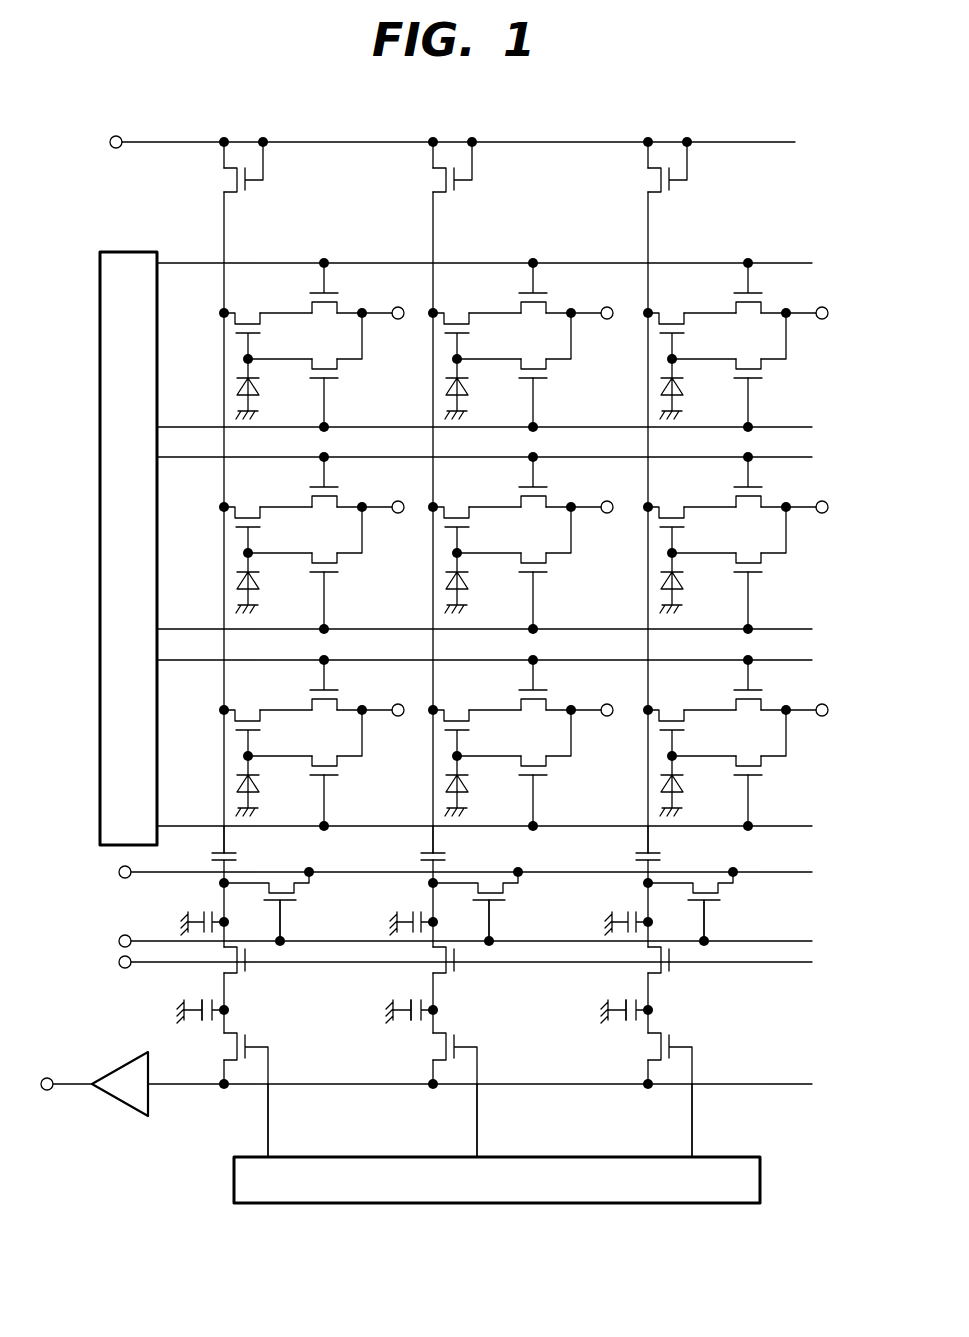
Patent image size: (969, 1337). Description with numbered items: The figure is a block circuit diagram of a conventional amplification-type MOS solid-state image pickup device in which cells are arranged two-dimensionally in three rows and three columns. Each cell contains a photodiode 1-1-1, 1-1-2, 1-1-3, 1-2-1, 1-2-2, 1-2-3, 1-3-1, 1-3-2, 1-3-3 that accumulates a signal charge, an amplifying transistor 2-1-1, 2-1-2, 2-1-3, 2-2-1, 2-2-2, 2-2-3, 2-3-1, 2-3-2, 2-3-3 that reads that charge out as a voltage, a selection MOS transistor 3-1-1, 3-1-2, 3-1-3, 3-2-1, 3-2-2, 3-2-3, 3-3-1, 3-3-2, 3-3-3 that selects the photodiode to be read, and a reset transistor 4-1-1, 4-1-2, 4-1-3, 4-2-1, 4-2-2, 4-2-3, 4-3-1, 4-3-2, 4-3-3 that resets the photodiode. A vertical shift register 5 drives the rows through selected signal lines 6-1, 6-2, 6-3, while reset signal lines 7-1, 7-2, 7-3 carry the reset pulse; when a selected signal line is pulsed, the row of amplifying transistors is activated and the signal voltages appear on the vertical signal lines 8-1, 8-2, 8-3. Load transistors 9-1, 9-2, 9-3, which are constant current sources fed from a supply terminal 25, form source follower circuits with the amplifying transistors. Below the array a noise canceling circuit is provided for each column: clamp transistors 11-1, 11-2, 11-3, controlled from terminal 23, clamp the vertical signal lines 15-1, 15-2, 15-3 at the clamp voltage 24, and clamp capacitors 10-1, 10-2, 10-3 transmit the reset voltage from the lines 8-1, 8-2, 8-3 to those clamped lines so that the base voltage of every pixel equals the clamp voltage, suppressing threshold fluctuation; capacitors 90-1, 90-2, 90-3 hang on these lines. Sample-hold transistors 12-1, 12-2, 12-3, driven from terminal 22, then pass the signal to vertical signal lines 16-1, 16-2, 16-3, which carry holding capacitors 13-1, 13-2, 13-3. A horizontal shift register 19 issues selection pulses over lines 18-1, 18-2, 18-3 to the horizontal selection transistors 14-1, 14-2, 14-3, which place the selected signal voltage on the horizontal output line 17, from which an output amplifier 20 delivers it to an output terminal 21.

The photodiode 1-1-1 is at (258, 399).
The photodiode 1-1-2 is at (467, 399).
The photodiode 1-1-3 is at (682, 399).
The photodiode 1-2-1 is at (258, 593).
The photodiode 1-2-2 is at (467, 593).
The photodiode 1-2-3 is at (682, 593).
The photodiode 1-3-1 is at (258, 796).
The photodiode 1-3-2 is at (467, 796).
The photodiode 1-3-3 is at (682, 796).
The amplifying transistor 2-1-1 is at (249, 324).
The amplifying transistor 2-1-2 is at (458, 324).
The amplifying transistor 2-1-3 is at (673, 324).
The amplifying transistor 2-2-1 is at (249, 518).
The amplifying transistor 2-2-2 is at (458, 518).
The amplifying transistor 2-2-3 is at (673, 518).
The amplifying transistor 2-3-1 is at (249, 721).
The amplifying transistor 2-3-2 is at (458, 721).
The amplifying transistor 2-3-3 is at (673, 721).
The selection MOS transistor 3-1-1 is at (342, 294).
The selection MOS transistor 3-1-2 is at (551, 294).
The selection MOS transistor 3-1-3 is at (766, 294).
The selection MOS transistor 3-2-1 is at (342, 488).
The selection MOS transistor 3-2-2 is at (551, 488).
The selection MOS transistor 3-2-3 is at (766, 488).
The selection MOS transistor 3-3-1 is at (342, 691).
The selection MOS transistor 3-3-2 is at (551, 691).
The selection MOS transistor 3-3-3 is at (766, 691).
The reset transistor 4-1-1 is at (338, 370).
The reset transistor 4-1-2 is at (547, 370).
The reset transistor 4-1-3 is at (762, 370).
The reset transistor 4-2-1 is at (338, 564).
The reset transistor 4-2-2 is at (547, 564).
The reset transistor 4-2-3 is at (762, 564).
The reset transistor 4-3-1 is at (338, 767).
The reset transistor 4-3-2 is at (547, 767).
The reset transistor 4-3-3 is at (762, 767).
The vertical shift register 5 is at (124, 250).
The selected signal line 6-1 is at (188, 263).
The selected signal line 6-2 is at (188, 457).
The selected signal line 6-3 is at (188, 660).
The reset signal line 7-1 is at (188, 427).
The reset signal line 7-2 is at (188, 629).
The reset signal line 7-3 is at (188, 826).
The vertical signal line 8-1 is at (222, 847).
The vertical signal line 8-2 is at (431, 847).
The vertical signal line 8-3 is at (646, 847).
The load transistor 9-1 is at (248, 194).
The load transistor 9-2 is at (457, 194).
The load transistor 9-3 is at (672, 194).
The clamp capacitor 10-1 is at (238, 858).
The clamp capacitor 10-2 is at (447, 858).
The clamp capacitor 10-3 is at (662, 858).
The clamp transistor 11-1 is at (294, 890).
The clamp transistor 11-2 is at (503, 890).
The clamp transistor 11-3 is at (718, 890).
The sample-hold transistor 12-1 is at (248, 970).
The sample-hold transistor 12-2 is at (457, 970).
The sample-hold transistor 12-3 is at (672, 970).
The holding capacitor 13-1 is at (204, 1021).
The holding capacitor 13-2 is at (413, 1021).
The holding capacitor 13-3 is at (628, 1021).
The horizontal selection transistor 14-1 is at (248, 1036).
The horizontal selection transistor 14-2 is at (457, 1036).
The horizontal selection transistor 14-3 is at (672, 1036).
The vertical signal line 15-1 is at (222, 898).
The vertical signal line 15-2 is at (431, 898).
The vertical signal line 15-3 is at (646, 898).
The vertical signal line 16-1 is at (227, 993).
The vertical signal line 16-2 is at (436, 993).
The vertical signal line 16-3 is at (651, 993).
The horizontal output line 17 is at (188, 1088).
The horizontal scanning line 18-1 is at (269, 1140).
The horizontal scanning line 18-2 is at (478, 1140).
The horizontal scanning line 18-3 is at (693, 1140).
The horizontal shift register 19 is at (762, 1176).
The output amplifier 20 is at (110, 1077).
The output terminal 21 is at (46, 1076).
The horizontal transfer control terminal 22 is at (119, 963).
The clamp control terminal 23 is at (119, 942).
The clamp voltage 24 is at (119, 873).
The power supply terminal 25 is at (116, 136).
The capacitor 90-1 is at (200, 909).
The capacitor 90-2 is at (409, 909).
The capacitor 90-3 is at (624, 909).